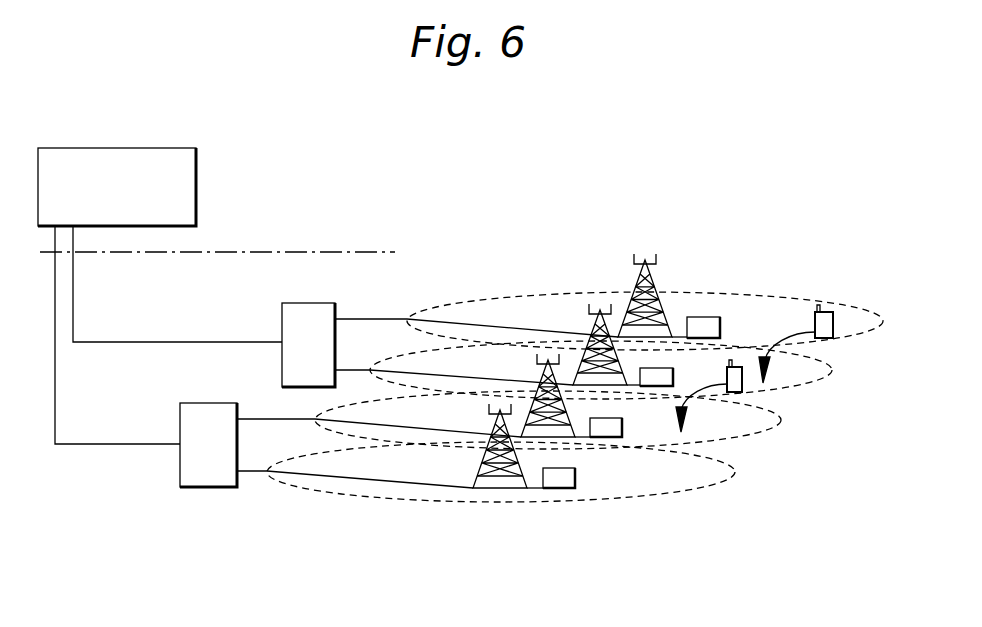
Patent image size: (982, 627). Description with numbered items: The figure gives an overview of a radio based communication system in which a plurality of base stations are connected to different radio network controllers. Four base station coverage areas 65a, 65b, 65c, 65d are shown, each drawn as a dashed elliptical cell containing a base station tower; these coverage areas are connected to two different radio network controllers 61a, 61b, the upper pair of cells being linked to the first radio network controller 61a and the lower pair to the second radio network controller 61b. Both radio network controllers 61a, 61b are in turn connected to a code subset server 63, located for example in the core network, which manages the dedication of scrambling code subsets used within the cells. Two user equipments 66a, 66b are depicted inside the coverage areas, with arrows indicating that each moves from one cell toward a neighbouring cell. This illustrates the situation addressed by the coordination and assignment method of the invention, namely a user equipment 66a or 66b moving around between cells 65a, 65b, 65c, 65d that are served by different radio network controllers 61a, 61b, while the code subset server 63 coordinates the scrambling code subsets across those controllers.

The code subset server 63 is at (113, 148).
The radio network controller 61a is at (282, 332).
The radio network controller 61b is at (180, 433).
The base station coverage area 65a is at (843, 340).
The base station coverage area 65b is at (792, 390).
The base station coverage area 65c is at (750, 438).
The base station coverage area 65d is at (695, 492).
The mobile station 66a is at (823, 310).
The mobile station 66b is at (735, 362).